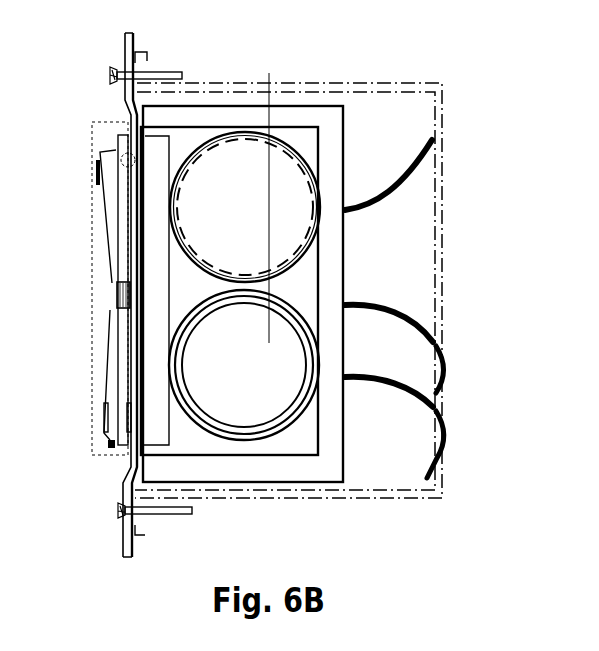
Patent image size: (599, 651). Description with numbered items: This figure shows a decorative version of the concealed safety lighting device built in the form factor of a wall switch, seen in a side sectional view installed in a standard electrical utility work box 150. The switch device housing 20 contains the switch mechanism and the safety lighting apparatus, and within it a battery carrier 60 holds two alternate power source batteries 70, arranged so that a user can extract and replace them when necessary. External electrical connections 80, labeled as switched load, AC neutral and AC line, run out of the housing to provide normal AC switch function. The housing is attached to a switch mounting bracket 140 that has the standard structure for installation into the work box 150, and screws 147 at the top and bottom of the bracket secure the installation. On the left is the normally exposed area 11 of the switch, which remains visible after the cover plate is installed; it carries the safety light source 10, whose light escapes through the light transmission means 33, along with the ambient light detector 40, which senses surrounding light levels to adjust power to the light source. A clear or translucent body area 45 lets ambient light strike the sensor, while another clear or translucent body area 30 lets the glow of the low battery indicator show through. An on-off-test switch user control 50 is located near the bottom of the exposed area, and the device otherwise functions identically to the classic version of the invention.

The safety light source 10 is at (115, 150).
The normally exposed area of a switch 11 is at (89, 316).
The switch device housing 20 is at (345, 282).
The clear or translucent body area 30 is at (115, 290).
The light transmission means 33 is at (97, 172).
The ambient light detector 40 is at (127, 417).
The clear or translucent body area 45 is at (108, 422).
The on-off-test switch user control 50 is at (110, 444).
The battery carrier 60 is at (158, 163).
The alternate power source battery 70 is at (243, 163).
The external electrical connections 80 is at (400, 381).
The switch mounting bracket 140 is at (139, 533).
The screw 147 is at (112, 71).
The electrical utility work box 150 is at (365, 90).